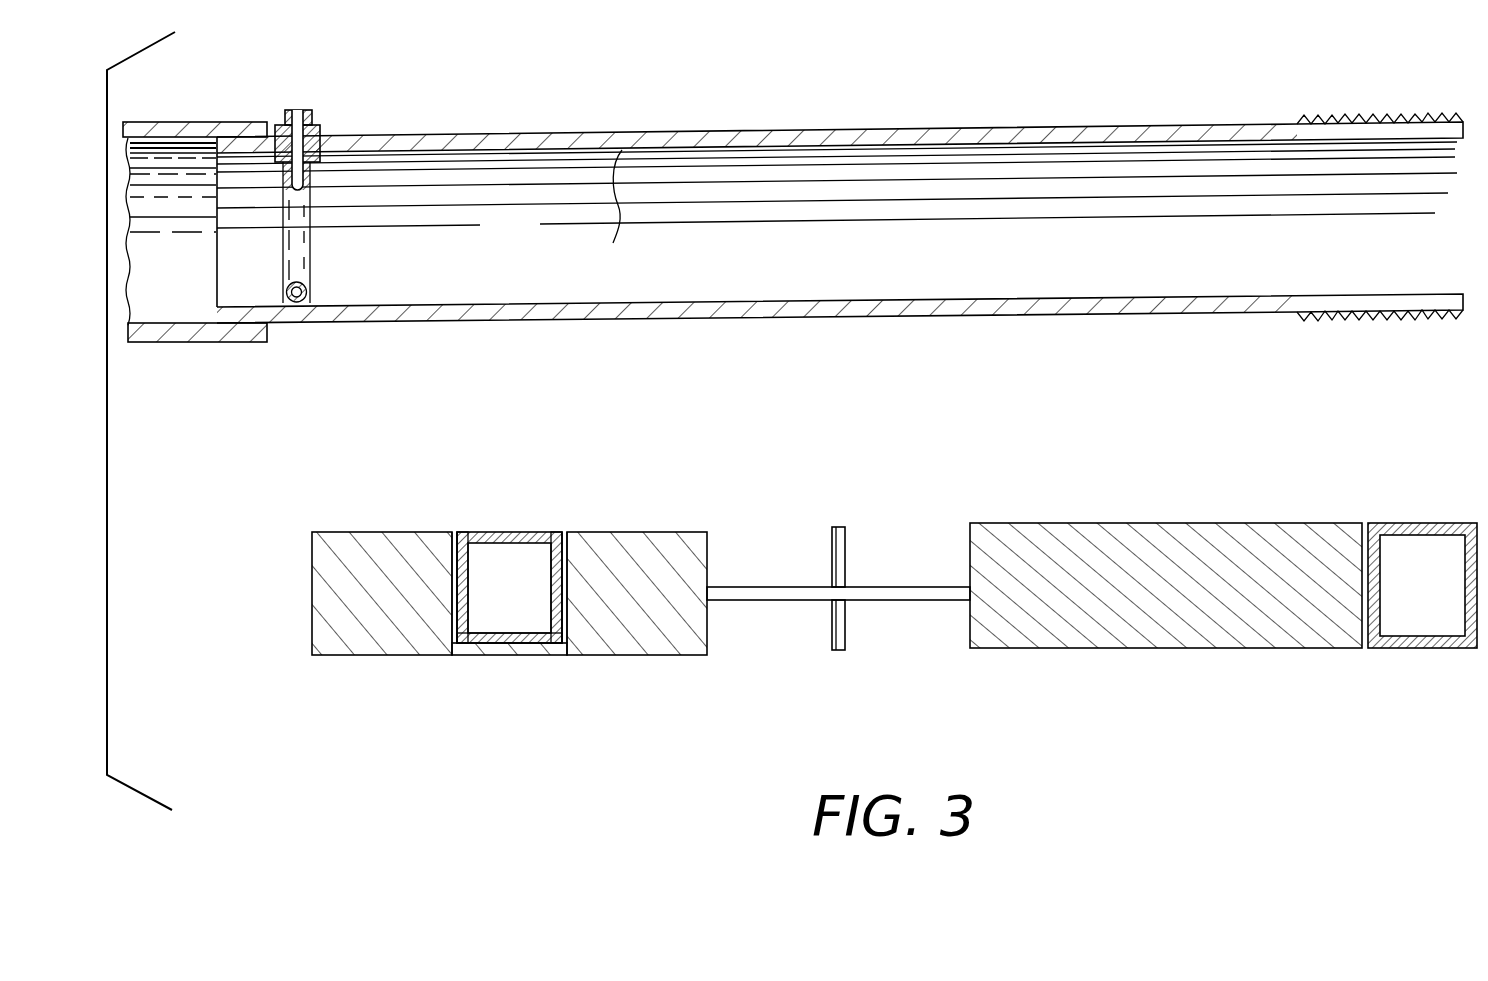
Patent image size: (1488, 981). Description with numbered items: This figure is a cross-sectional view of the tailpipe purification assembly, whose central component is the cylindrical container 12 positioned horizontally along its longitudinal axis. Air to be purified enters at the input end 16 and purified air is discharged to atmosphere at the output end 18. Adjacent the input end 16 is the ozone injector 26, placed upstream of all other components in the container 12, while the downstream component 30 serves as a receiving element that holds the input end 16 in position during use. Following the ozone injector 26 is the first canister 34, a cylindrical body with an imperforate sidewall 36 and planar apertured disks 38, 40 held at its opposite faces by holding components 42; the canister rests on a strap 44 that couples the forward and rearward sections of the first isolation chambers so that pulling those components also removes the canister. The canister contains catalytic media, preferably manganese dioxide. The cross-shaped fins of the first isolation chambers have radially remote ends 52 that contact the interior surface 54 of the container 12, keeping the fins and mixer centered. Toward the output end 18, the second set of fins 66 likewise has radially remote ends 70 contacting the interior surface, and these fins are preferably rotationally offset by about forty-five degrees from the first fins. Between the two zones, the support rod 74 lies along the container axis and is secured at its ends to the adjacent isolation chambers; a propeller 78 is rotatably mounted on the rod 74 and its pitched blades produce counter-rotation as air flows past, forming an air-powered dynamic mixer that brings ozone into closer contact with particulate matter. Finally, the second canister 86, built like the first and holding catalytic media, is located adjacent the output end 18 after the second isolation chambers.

The cylindrical container 12 is at (812, 128).
The input end 16 is at (213, 153).
The output end 18 is at (1462, 300).
The ozone injector 26 is at (312, 243).
The downstream component 30 is at (196, 122).
The first canister 34 is at (512, 532).
The imperforate sidewall 36 is at (507, 650).
The planar apertured disk 38 is at (447, 633).
The planar apertured disk 40 is at (563, 613).
The holding components 42 is at (462, 532).
The strap 44 is at (527, 647).
The radially remote ends 52 is at (347, 532).
The interior surface 54 is at (545, 305).
The second set of fins 66 is at (1060, 523).
The radially remote ends 70 is at (1205, 523).
The support rod 74 is at (890, 600).
The propeller 78 is at (838, 650).
The second canister 86 is at (1420, 523).